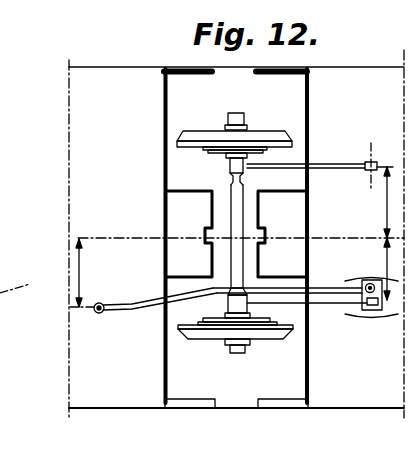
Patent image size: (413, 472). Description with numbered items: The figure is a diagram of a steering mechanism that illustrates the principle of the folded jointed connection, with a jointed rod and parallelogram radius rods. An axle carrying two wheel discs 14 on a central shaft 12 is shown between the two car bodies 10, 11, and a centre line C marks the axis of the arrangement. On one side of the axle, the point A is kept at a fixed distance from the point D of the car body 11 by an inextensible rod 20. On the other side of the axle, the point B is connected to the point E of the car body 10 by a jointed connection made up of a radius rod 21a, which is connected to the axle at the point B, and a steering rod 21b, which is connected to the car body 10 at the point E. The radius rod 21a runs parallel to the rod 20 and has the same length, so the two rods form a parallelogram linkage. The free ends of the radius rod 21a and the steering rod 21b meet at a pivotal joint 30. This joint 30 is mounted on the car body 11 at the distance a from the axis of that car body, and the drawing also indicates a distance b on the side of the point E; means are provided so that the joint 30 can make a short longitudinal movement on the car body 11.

The car body 10 is at (118, 55).
The car body 11 is at (357, 80).
The shaft 12 is at (232, 200).
The disc 14 is at (257, 137).
The inextensible rod 20 is at (327, 164).
The radius rod 21a is at (332, 304).
The steering rod 21b is at (150, 299).
The pivotal joint 30 is at (357, 288).
The point A is at (229, 168).
The point B is at (226, 304).
The point C is at (235, 237).
The point D is at (377, 157).
The point E is at (97, 314).
The distance a is at (385, 233).
The distance b is at (82, 273).